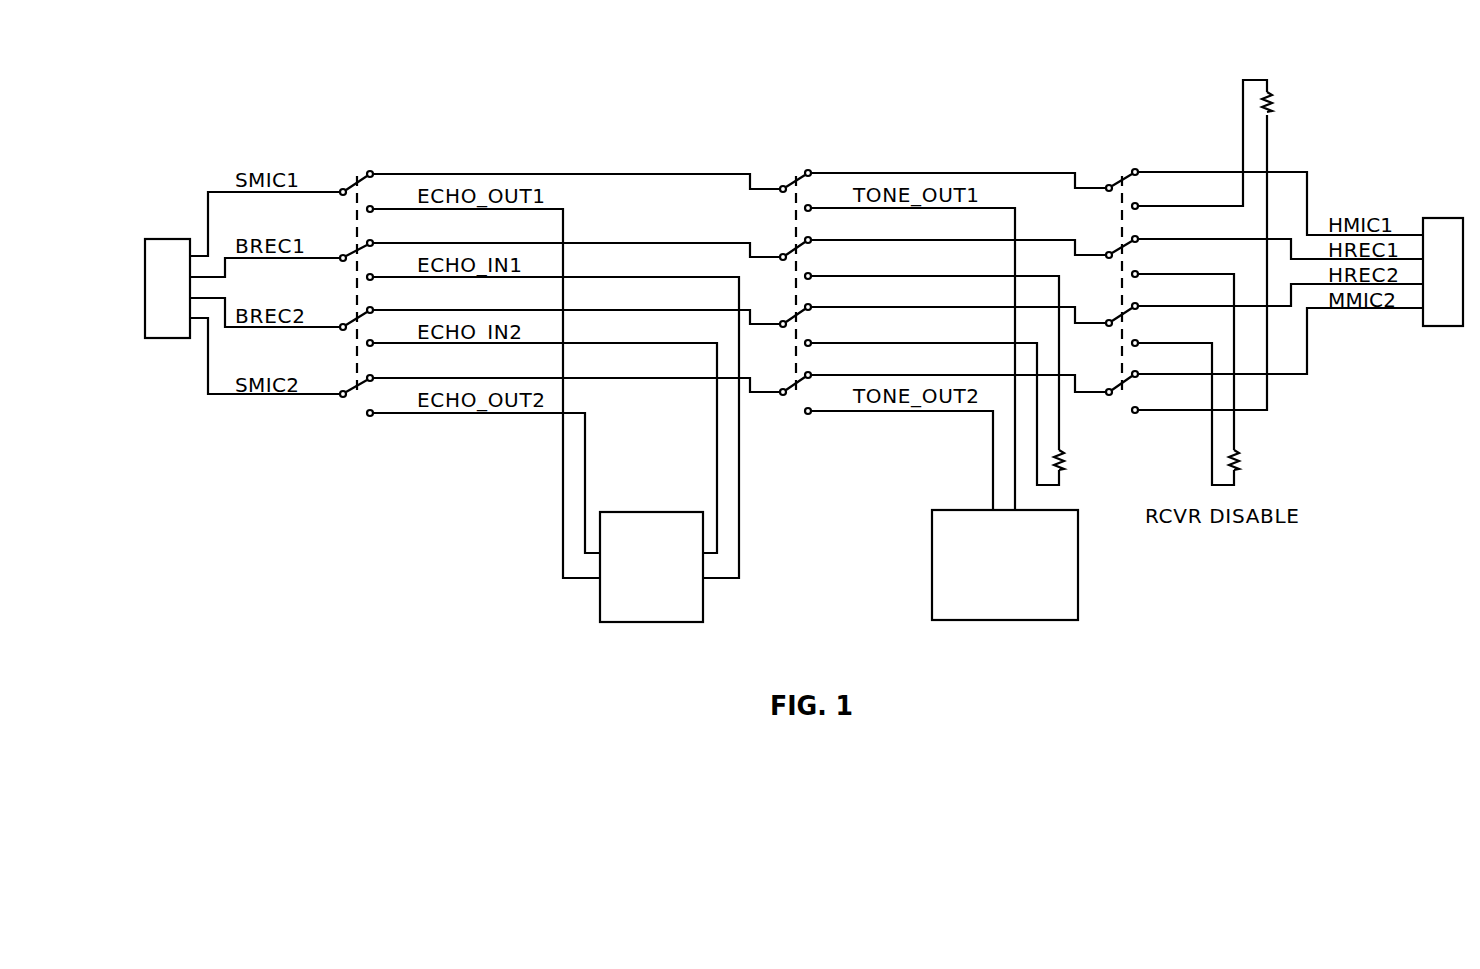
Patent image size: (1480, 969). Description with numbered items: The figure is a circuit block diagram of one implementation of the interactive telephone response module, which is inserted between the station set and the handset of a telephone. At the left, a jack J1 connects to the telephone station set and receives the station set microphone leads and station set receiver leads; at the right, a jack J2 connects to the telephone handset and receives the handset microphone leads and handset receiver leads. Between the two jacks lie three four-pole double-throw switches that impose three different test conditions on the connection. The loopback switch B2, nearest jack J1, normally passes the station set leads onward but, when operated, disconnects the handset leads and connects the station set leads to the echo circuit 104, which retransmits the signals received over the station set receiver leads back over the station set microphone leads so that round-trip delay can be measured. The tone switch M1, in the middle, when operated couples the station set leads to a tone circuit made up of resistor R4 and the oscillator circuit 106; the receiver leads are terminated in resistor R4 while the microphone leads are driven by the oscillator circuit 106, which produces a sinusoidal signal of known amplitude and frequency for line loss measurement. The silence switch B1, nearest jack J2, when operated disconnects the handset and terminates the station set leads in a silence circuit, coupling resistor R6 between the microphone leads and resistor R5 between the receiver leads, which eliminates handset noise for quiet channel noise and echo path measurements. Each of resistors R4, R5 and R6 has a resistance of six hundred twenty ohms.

The echo circuit 104 is at (648, 622).
The oscillator circuit 106 is at (1008, 620).
The jack J1 is at (168, 288).
The jack J2 is at (1445, 275).
The loopback switch B2 is at (377, 288).
The tone switch M1 is at (815, 285).
The silence switch B1 is at (1144, 285).
The resistor R4 is at (1082, 463).
The resistor R5 is at (1257, 463).
The resistor R6 is at (1292, 105).